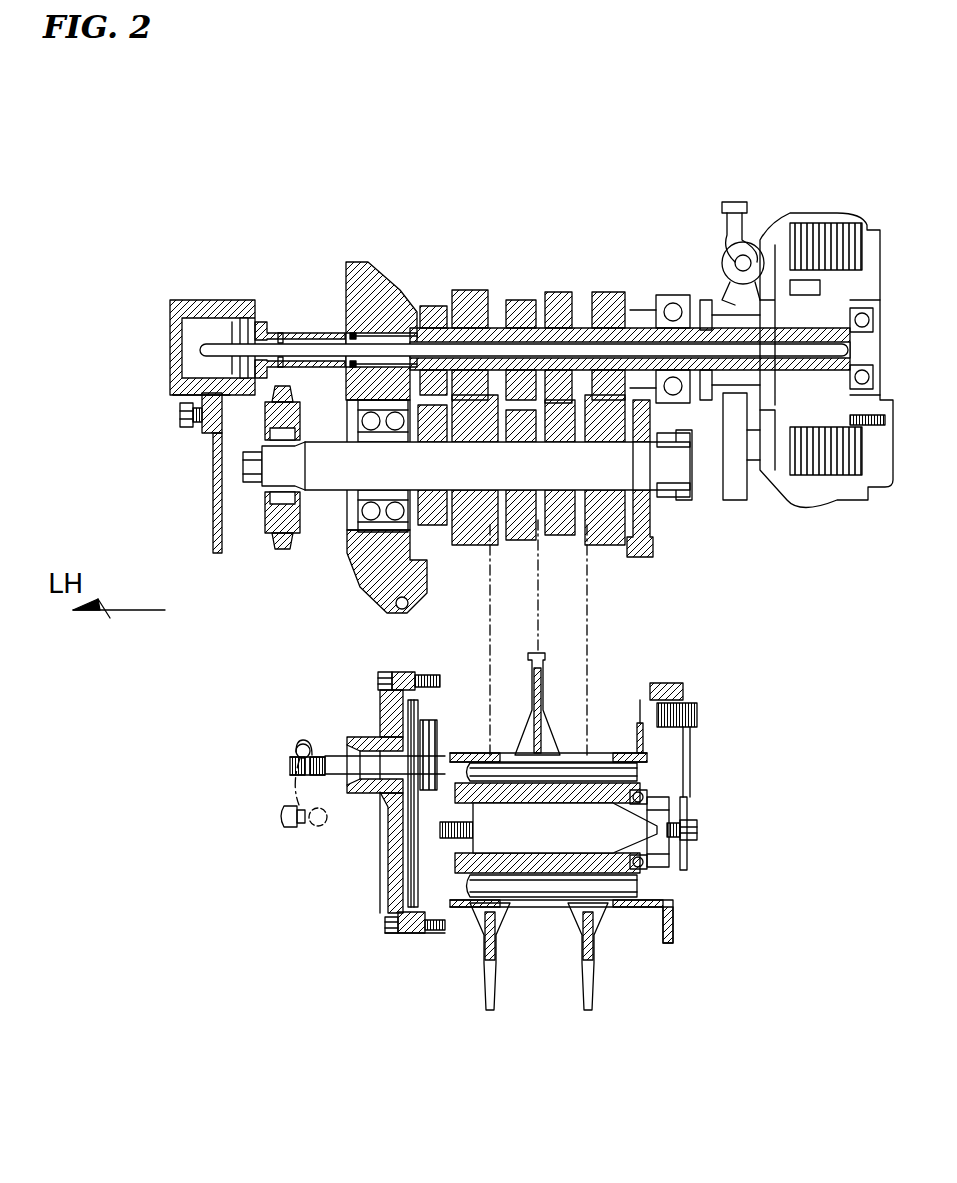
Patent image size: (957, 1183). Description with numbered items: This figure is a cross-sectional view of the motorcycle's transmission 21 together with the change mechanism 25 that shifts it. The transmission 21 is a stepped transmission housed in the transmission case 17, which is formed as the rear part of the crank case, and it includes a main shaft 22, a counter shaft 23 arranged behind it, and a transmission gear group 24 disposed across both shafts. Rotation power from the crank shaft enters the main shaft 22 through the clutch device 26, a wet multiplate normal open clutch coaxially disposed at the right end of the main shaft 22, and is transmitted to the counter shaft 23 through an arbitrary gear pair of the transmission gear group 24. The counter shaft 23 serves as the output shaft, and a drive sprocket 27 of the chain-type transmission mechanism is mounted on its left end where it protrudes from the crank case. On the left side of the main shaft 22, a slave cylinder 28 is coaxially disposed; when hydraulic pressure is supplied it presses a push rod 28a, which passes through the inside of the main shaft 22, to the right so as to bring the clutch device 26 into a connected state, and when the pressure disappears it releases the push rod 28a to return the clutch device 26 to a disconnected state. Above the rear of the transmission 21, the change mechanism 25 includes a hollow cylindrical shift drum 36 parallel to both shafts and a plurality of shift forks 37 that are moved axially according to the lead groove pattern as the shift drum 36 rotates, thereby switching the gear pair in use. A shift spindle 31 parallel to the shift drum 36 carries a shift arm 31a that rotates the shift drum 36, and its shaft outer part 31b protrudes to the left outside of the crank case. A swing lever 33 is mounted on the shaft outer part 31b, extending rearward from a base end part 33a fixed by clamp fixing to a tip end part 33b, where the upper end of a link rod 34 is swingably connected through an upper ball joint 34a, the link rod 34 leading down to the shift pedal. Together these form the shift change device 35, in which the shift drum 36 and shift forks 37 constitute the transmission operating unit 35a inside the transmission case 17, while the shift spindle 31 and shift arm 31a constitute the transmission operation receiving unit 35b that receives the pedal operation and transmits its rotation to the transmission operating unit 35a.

The transmission 21 is at (428, 172).
The transmission case 17 is at (346, 275).
The main shaft 22 is at (583, 330).
The counter shaft 23 is at (470, 465).
The transmission gear group 24 is at (550, 287).
The change mechanism 25 is at (255, 713).
The clutch device 26 is at (815, 212).
The drive sprocket 27 is at (280, 545).
The slave cylinder 28 is at (176, 300).
The push rod 28a is at (497, 352).
The shift spindle 31 is at (357, 711).
The shift arm 31a is at (405, 845).
The shaft outer part 31b is at (335, 758).
The swing lever 33 is at (288, 792).
The base end part 33a is at (297, 743).
The tip end part 33b is at (293, 828).
The link rod 34 is at (269, 882).
The upper ball joint 34a is at (318, 830).
The shift change device 35 is at (370, 1080).
The transmission operating unit 35a is at (405, 968).
The transmission operation receiving unit 35b is at (332, 887).
The shift drum 36 is at (587, 787).
The shift fork 37 is at (545, 700).